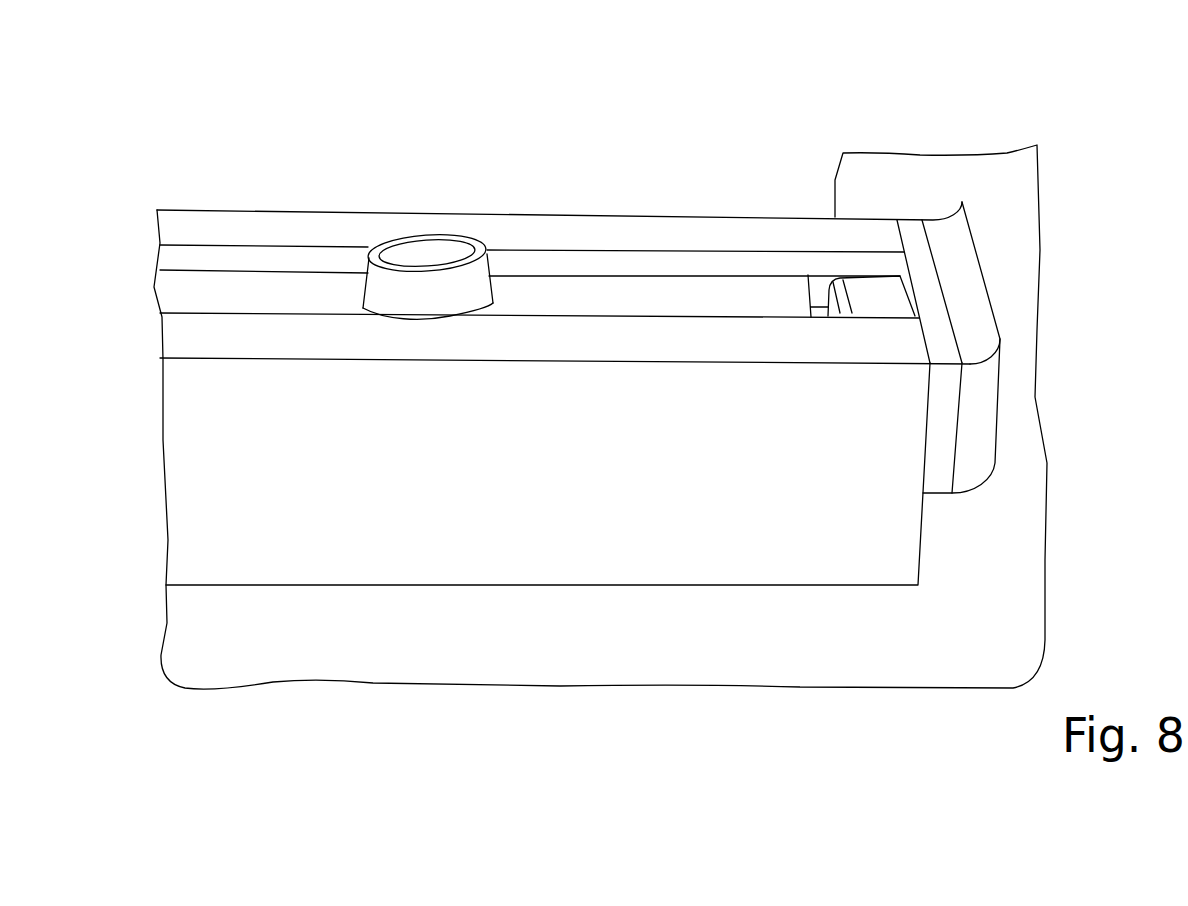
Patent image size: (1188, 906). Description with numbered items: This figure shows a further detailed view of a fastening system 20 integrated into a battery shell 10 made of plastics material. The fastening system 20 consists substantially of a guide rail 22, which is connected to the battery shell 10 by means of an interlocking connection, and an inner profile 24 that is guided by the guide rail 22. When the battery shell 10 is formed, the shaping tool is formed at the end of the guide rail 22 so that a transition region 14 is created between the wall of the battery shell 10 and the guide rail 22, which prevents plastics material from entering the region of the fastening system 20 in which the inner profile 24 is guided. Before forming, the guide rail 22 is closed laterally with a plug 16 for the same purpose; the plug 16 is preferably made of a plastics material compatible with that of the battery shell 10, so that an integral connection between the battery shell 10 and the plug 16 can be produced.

The battery shell 10 is at (297, 646).
The transition region 14 is at (951, 305).
The plug 16 is at (908, 233).
The fastening system 20 is at (429, 185).
The guide rail 22 is at (205, 548).
The inner profile 24 is at (206, 306).